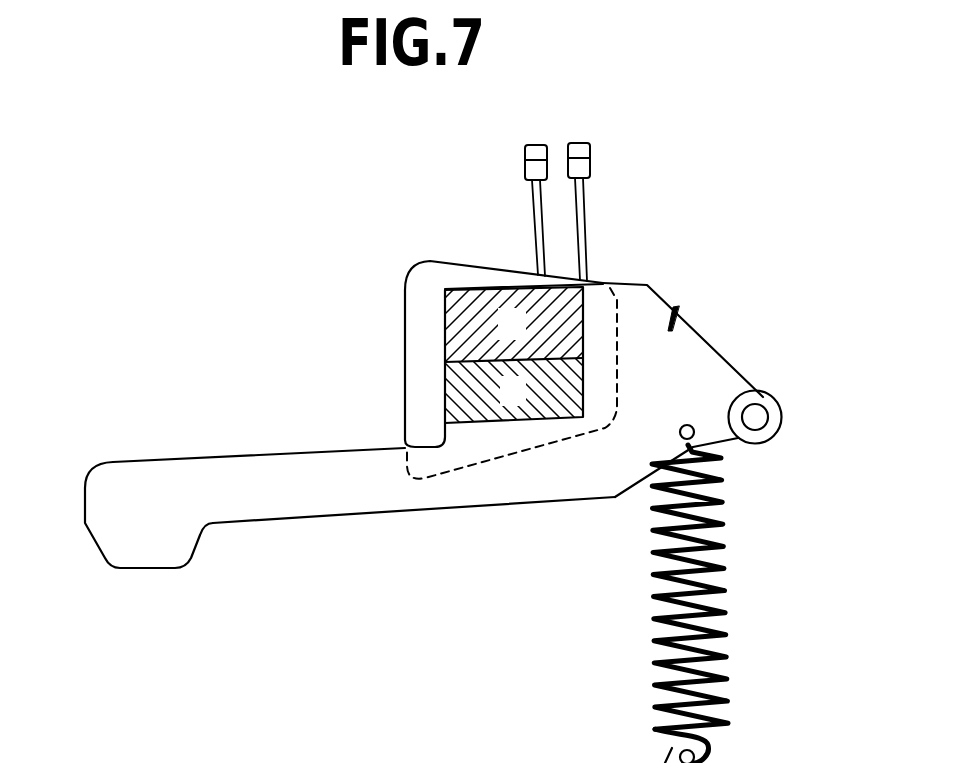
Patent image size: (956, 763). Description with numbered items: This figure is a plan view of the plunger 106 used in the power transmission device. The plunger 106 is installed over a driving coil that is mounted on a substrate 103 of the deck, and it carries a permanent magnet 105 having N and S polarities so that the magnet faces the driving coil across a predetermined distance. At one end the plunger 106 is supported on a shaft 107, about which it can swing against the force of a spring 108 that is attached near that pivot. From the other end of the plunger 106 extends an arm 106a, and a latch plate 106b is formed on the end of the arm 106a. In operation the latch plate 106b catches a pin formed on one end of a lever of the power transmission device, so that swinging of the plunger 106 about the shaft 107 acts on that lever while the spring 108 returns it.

The substrate 103 is at (428, 267).
The permanent magnet 105 is at (455, 397).
The plunger 106 is at (677, 310).
The arm 106a is at (176, 472).
The latch plate 106b is at (140, 570).
The shaft 107 is at (757, 415).
The spring 108 is at (728, 530).